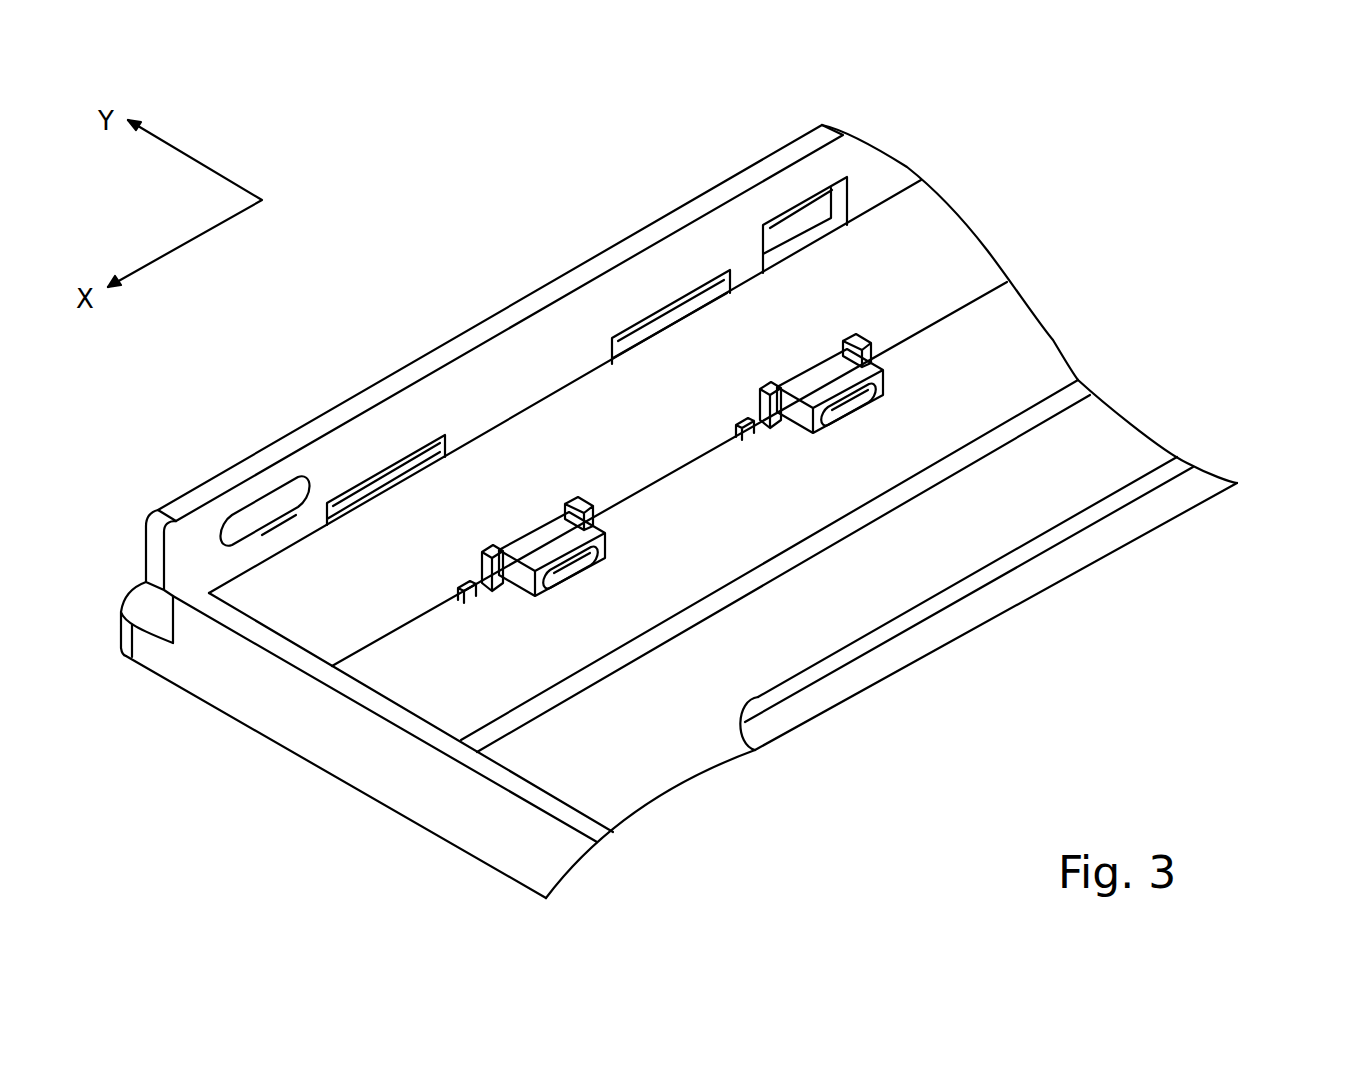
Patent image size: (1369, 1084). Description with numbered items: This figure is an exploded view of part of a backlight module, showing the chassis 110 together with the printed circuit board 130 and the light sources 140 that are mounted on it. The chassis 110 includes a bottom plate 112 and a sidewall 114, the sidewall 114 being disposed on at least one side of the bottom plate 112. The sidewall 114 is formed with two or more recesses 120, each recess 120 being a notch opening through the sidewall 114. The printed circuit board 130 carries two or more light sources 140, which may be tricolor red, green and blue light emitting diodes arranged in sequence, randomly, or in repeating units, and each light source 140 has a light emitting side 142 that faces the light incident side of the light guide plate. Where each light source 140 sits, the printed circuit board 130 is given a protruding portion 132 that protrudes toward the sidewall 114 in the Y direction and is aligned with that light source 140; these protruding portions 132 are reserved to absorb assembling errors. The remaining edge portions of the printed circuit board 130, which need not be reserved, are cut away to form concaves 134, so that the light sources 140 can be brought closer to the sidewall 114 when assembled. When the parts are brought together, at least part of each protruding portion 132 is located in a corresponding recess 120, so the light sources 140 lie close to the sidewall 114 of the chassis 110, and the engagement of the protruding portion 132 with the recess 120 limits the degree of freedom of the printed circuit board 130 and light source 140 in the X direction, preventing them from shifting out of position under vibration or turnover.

The chassis 110 is at (1168, 88).
The bottom plate 112 is at (950, 250).
The sidewall 114 is at (877, 172).
The recess 120 is at (450, 440).
The printed circuit board 130 is at (636, 593).
The protruding portion 132 is at (905, 462).
The concave 134 is at (682, 478).
The light source 140 is at (837, 382).
The light emitting side 142 is at (853, 405).